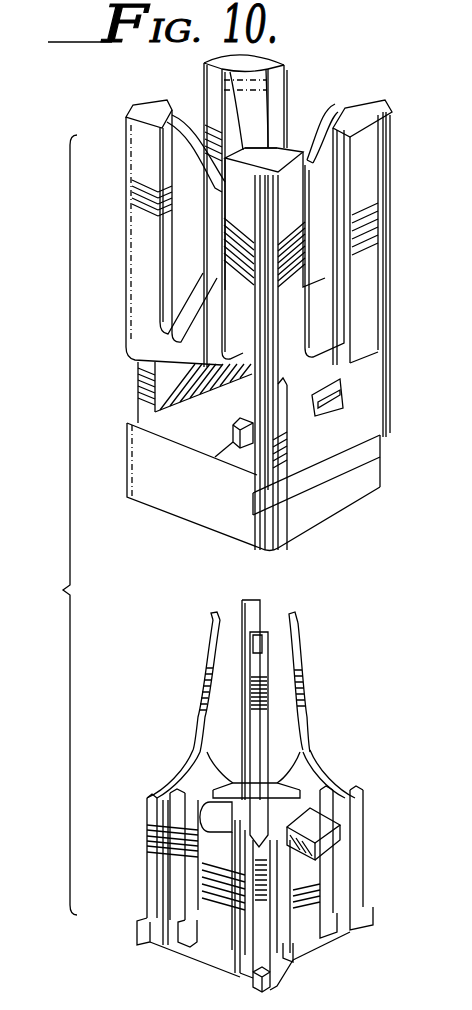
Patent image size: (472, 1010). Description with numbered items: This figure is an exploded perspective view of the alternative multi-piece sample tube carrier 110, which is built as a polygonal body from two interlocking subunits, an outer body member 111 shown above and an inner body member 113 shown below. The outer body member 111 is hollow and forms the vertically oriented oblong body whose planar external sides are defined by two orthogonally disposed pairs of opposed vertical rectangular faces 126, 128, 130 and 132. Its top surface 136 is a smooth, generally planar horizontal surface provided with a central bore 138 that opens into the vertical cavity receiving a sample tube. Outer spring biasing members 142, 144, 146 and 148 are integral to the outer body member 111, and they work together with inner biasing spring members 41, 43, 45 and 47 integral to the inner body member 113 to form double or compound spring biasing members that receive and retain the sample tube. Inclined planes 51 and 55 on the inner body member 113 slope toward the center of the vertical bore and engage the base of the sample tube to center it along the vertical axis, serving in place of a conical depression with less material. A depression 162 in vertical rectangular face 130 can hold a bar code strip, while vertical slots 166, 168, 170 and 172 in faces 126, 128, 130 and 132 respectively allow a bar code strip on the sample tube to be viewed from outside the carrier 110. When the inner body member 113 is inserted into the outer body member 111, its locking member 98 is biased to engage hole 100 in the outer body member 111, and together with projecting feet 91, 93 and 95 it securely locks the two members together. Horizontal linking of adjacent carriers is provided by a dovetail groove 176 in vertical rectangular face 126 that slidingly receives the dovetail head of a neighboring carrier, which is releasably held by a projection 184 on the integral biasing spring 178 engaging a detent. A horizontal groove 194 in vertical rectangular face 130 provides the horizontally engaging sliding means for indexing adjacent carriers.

The top surface 136 is at (254, 58).
The central bore 138 is at (220, 83).
The outer spring biasing member 144 is at (258, 97).
The vertical slot 168 is at (285, 103).
The vertical slot 172 is at (213, 107).
The vertical rectangular face 132 is at (165, 103).
The outer spring biasing member 146 is at (365, 108).
The vertical rectangular face 128 is at (380, 114).
The outer spring biasing member 142 is at (240, 155).
The outer spring biasing member 148 is at (262, 148).
The vertical slot 166 is at (167, 182).
The depression 162 is at (367, 212).
The vertical rectangular face 126 is at (143, 285).
The vertical slot 170 is at (340, 312).
The vertical rectangular face 130 is at (384, 375).
The hole 100 is at (337, 408).
The dovetail groove 176 is at (287, 445).
The horizontal groove 194 is at (353, 470).
The sample tube carrier 110 is at (70, 590).
The outer body member 111 is at (119, 437).
The inner biasing spring member 43 is at (240, 605).
The inner biasing spring member 41 is at (213, 638).
The inner biasing spring member 45 is at (298, 623).
The inner biasing spring member 47 is at (260, 675).
The inclined plane 51 is at (208, 768).
The inclined plane 55 is at (294, 768).
The projection 184 is at (207, 813).
The inner body member 113 is at (140, 907).
The projecting foot 91 is at (137, 930).
The locking member 98 is at (337, 852).
The projecting foot 95 is at (373, 913).
The integral biasing spring 178 is at (220, 908).
The projecting foot 93 is at (273, 977).